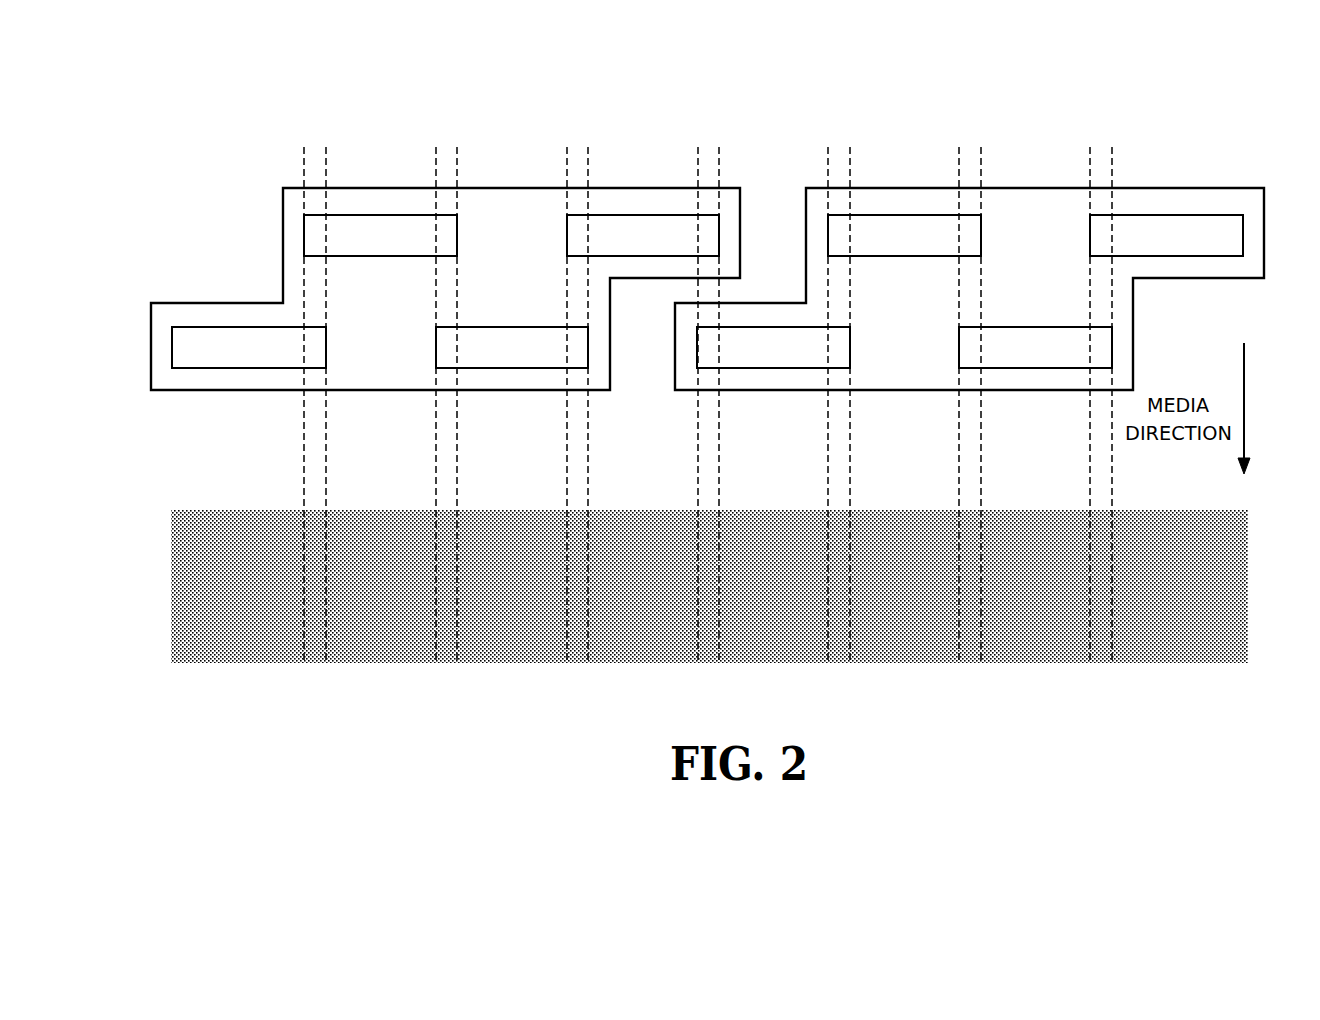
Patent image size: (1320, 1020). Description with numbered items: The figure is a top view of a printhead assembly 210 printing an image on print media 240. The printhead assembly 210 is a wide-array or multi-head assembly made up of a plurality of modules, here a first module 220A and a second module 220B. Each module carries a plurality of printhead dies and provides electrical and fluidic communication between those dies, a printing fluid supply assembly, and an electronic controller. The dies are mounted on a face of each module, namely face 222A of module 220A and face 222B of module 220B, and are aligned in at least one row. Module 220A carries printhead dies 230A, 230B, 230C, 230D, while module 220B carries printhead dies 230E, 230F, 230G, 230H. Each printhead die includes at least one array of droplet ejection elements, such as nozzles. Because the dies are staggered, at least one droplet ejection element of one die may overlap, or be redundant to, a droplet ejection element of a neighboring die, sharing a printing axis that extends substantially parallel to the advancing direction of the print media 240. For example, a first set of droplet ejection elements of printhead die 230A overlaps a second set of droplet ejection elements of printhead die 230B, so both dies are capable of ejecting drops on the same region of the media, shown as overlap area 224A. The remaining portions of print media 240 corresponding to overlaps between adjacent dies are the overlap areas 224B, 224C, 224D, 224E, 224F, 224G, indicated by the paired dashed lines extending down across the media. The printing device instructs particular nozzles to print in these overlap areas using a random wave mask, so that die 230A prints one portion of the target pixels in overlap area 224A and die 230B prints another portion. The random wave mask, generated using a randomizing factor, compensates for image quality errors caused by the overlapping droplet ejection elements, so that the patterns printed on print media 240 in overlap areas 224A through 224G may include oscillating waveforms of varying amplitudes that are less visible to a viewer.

The printhead assembly 210 is at (251, 131).
The module 220A is at (495, 188).
The module 220B is at (1230, 188).
The face 222A is at (365, 378).
The face 222B is at (1197, 265).
The overlap area 224A is at (313, 155).
The overlap area 224B is at (445, 155).
The overlap area 224C is at (575, 155).
The overlap area 224D is at (708, 153).
The overlap area 224E is at (838, 155).
The overlap area 224F is at (967, 153).
The overlap area 224G is at (1098, 155).
The printhead die 230A is at (172, 345).
The printhead die 230B is at (303, 233).
The printhead die 230C is at (435, 345).
The printhead die 230D is at (567, 233).
The printhead die 230E is at (697, 350).
The printhead die 230F is at (828, 233).
The printhead die 230G is at (959, 350).
The printhead die 230H is at (1090, 238).
The print media 240 is at (172, 592).